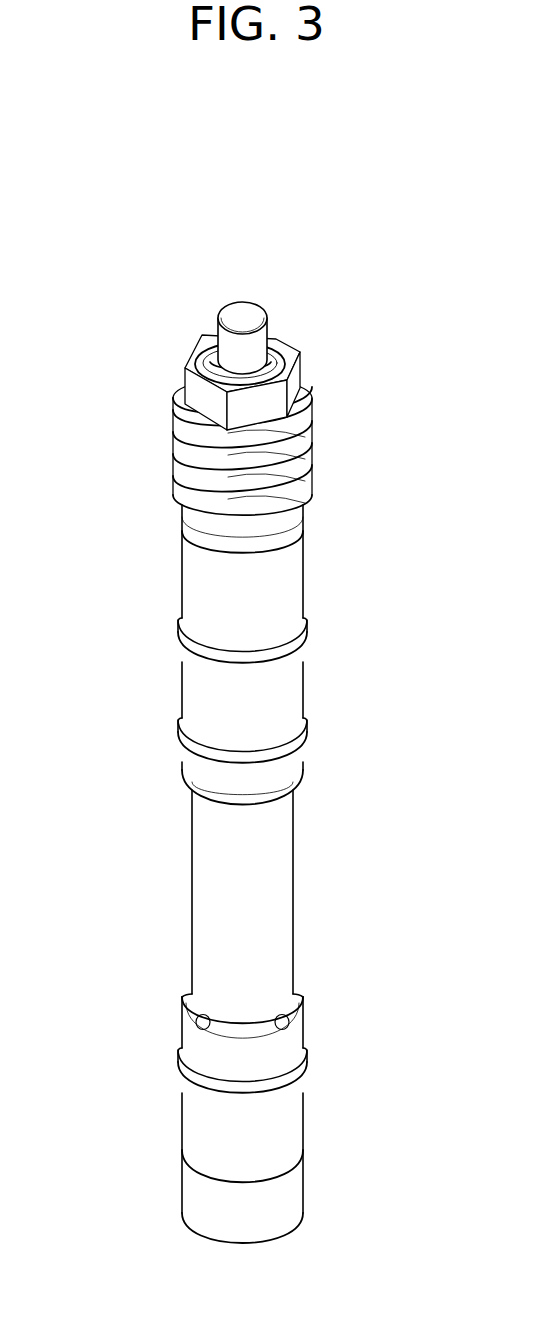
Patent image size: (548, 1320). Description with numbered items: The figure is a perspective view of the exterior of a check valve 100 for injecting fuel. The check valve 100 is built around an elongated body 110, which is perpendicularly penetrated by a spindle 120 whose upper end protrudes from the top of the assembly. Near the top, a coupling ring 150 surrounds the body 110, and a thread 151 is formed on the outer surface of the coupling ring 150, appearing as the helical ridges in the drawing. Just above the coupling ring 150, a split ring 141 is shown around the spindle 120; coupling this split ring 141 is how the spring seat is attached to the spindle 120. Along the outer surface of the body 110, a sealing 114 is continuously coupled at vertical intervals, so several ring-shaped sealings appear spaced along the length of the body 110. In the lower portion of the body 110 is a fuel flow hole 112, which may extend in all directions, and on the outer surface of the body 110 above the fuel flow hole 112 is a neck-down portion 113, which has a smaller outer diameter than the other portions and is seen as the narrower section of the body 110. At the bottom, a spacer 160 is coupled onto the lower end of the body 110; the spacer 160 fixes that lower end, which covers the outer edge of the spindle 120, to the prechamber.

The check valve 100 is at (124, 320).
The body 110 is at (316, 565).
The fuel flow hole 112 is at (284, 1022).
The neck-down portion 113 is at (272, 902).
The sealing 114 is at (263, 655).
The spindle 120 is at (273, 303).
The split ring 141 is at (272, 358).
The coupling ring 150 is at (322, 459).
The thread 151 is at (315, 478).
The spacer 160 is at (307, 1193).